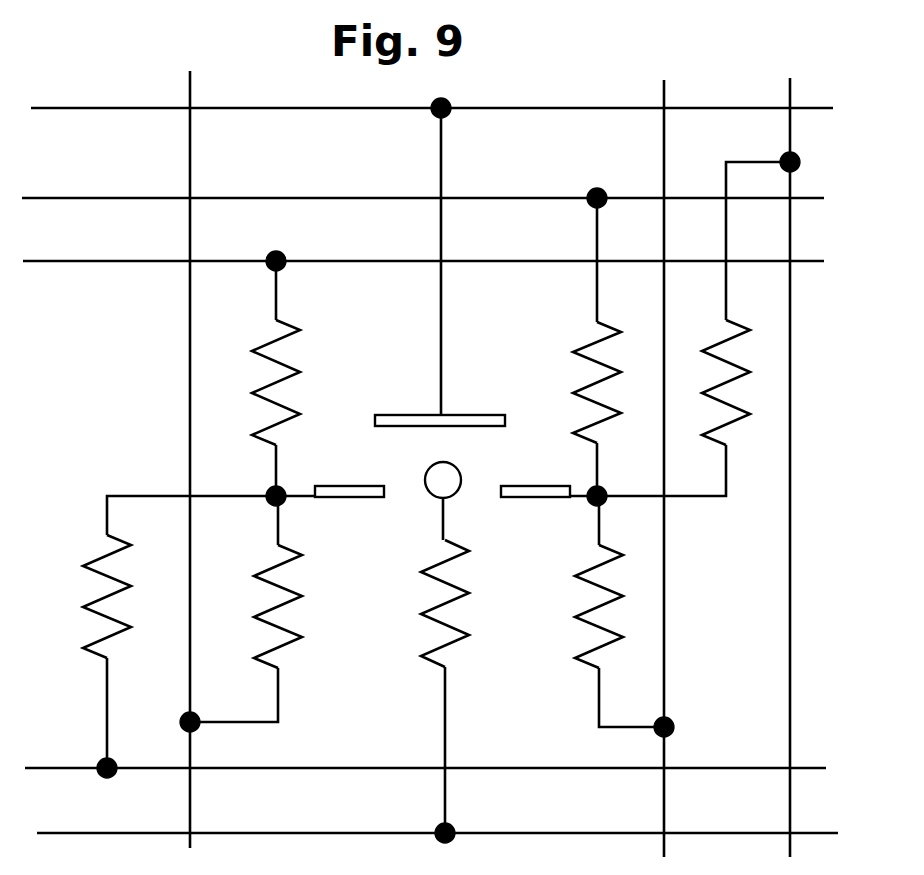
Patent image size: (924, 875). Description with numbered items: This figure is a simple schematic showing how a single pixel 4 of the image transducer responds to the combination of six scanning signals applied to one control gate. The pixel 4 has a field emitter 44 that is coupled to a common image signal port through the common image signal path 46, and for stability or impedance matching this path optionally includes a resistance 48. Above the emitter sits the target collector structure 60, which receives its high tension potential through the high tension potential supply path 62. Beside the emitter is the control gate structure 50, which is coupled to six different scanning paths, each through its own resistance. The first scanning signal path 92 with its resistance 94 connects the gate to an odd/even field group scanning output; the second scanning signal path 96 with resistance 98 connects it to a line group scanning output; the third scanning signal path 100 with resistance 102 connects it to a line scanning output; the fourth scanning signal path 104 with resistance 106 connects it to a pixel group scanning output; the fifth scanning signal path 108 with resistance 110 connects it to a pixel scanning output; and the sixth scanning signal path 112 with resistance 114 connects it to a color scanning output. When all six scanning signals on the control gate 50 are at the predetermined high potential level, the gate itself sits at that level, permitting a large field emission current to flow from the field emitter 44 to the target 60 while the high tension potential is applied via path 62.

The pixel 4 is at (112, 62).
The field emitter 44 is at (435, 470).
The common image signal path 46 is at (805, 833).
The resistance 48 is at (438, 627).
The control gate structure 50 is at (533, 497).
The target collector structure 60 is at (465, 415).
The high tension potential supply path 62 is at (493, 108).
The first scanning signal path 92 is at (802, 767).
The resistance 94 is at (82, 578).
The second scanning signal path 96 is at (66, 198).
The resistance 98 is at (595, 350).
The third scanning signal path 100 is at (50, 261).
The resistance 102 is at (290, 358).
The fourth scanning signal path 104 is at (683, 108).
The resistance 106 is at (590, 592).
The fifth scanning signal path 108 is at (791, 98).
The resistance 110 is at (736, 356).
The sixth scanning signal path 112 is at (191, 182).
The resistance 114 is at (296, 590).